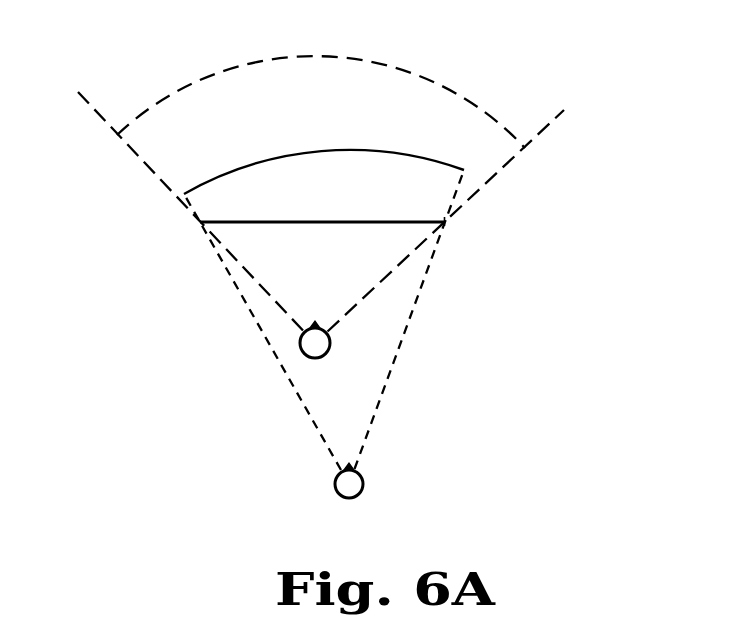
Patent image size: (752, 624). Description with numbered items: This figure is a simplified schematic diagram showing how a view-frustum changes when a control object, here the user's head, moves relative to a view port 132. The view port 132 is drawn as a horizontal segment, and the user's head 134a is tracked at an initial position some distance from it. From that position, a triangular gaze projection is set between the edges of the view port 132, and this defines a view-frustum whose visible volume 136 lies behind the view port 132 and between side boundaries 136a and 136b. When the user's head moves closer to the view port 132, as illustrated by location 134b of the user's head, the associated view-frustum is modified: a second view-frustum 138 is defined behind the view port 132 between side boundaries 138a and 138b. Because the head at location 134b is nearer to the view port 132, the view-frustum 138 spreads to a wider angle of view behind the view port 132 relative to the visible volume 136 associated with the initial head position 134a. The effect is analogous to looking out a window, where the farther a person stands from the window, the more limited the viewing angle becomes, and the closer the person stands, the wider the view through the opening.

The view port 132 is at (432, 226).
The user's head 134a is at (362, 492).
The location of the user's head 134b is at (300, 345).
The visible volume 136 is at (348, 163).
The side boundary 136a is at (392, 368).
The side boundary 136b is at (247, 297).
The view-frustum 138 is at (480, 157).
The side boundary 138a is at (548, 121).
The side boundary 138b is at (130, 145).